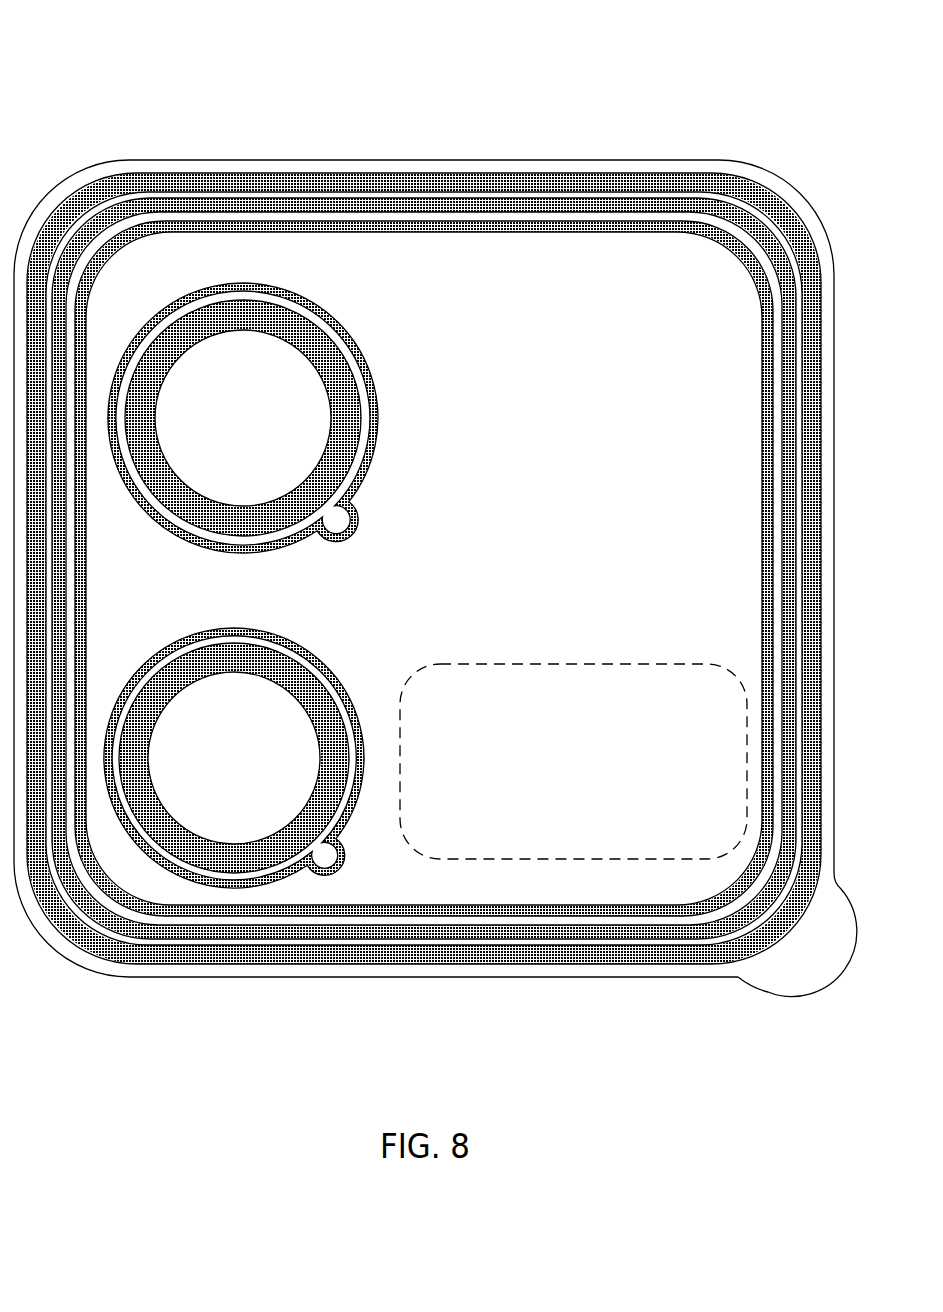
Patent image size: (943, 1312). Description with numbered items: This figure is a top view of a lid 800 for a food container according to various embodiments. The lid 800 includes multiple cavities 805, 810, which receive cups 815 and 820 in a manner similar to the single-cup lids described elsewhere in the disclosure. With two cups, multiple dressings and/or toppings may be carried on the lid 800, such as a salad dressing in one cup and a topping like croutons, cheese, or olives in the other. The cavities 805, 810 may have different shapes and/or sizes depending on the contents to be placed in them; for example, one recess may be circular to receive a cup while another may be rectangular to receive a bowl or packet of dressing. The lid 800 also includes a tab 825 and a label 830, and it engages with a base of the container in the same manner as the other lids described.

The lid 800 is at (158, 107).
The cavity 805 is at (241, 626).
The cavity 810 is at (272, 665).
The cup 815 is at (220, 281).
The cup 820 is at (280, 320).
The tab 825 is at (765, 988).
The label 830 is at (532, 858).